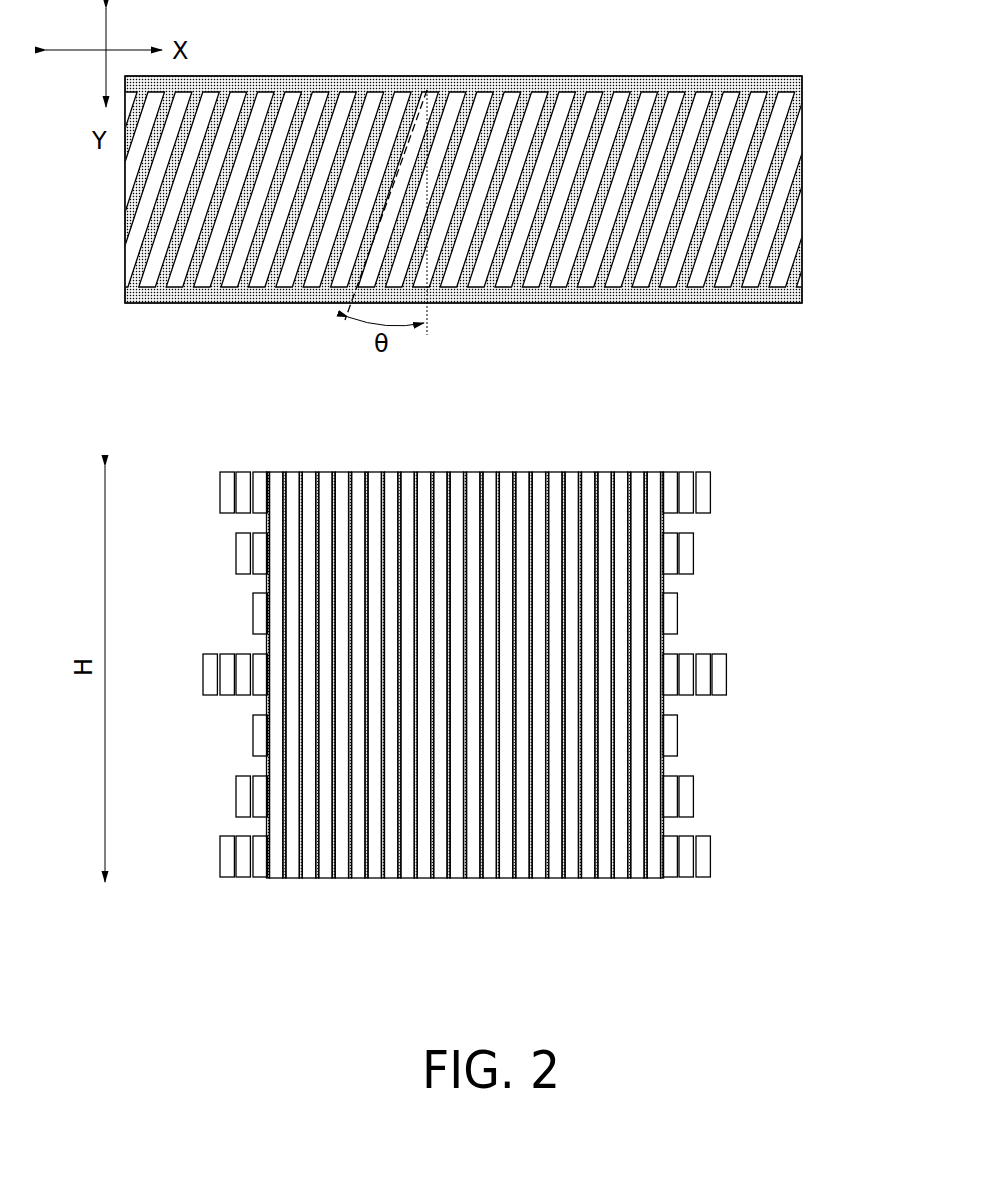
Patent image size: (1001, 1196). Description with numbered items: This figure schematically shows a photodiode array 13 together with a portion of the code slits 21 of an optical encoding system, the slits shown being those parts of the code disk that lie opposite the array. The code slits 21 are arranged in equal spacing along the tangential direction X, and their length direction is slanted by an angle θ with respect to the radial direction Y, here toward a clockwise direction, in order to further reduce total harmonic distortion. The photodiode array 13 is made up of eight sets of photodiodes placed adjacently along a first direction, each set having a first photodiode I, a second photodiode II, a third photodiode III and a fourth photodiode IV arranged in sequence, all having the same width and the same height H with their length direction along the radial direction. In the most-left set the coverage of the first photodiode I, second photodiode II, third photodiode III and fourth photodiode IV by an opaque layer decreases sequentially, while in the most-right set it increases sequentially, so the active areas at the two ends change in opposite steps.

The code slits 21 is at (785, 185).
The photodiode array 13 is at (536, 701).
The first photodiode I is at (440, 690).
The second photodiode II is at (457, 701).
The third photodiode III is at (474, 690).
The fourth photodiode IV is at (489, 701).